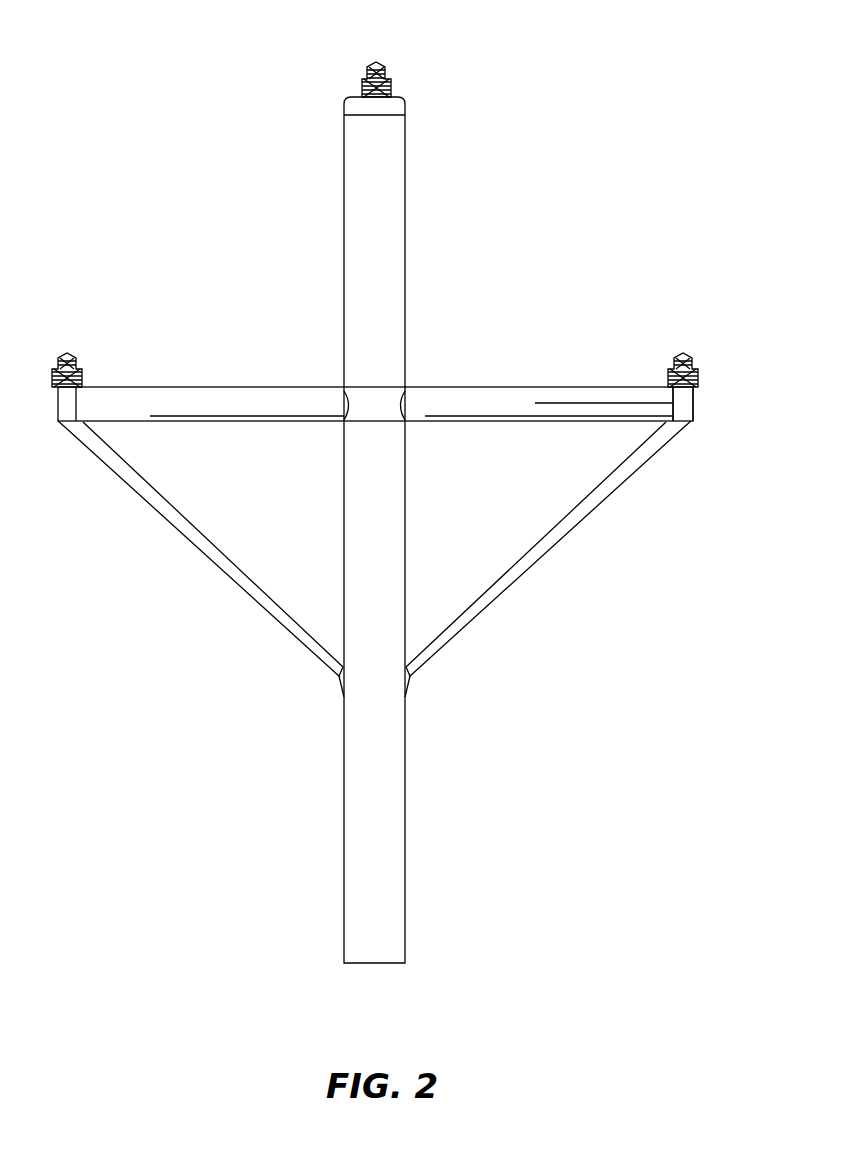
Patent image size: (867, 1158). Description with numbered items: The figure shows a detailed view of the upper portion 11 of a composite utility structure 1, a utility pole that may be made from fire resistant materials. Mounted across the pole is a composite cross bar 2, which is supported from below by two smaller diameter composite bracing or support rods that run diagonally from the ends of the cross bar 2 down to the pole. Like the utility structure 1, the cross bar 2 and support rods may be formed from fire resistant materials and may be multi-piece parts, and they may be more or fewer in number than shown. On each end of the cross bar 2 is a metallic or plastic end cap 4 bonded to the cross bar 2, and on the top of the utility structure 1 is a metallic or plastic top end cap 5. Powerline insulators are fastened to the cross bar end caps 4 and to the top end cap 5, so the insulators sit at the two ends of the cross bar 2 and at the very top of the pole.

The utility structure 1 is at (406, 866).
The composite cross bar 2 is at (508, 387).
The end caps 4 is at (698, 412).
The top end cap 5 is at (342, 108).
The upper portion 11 is at (112, 44).